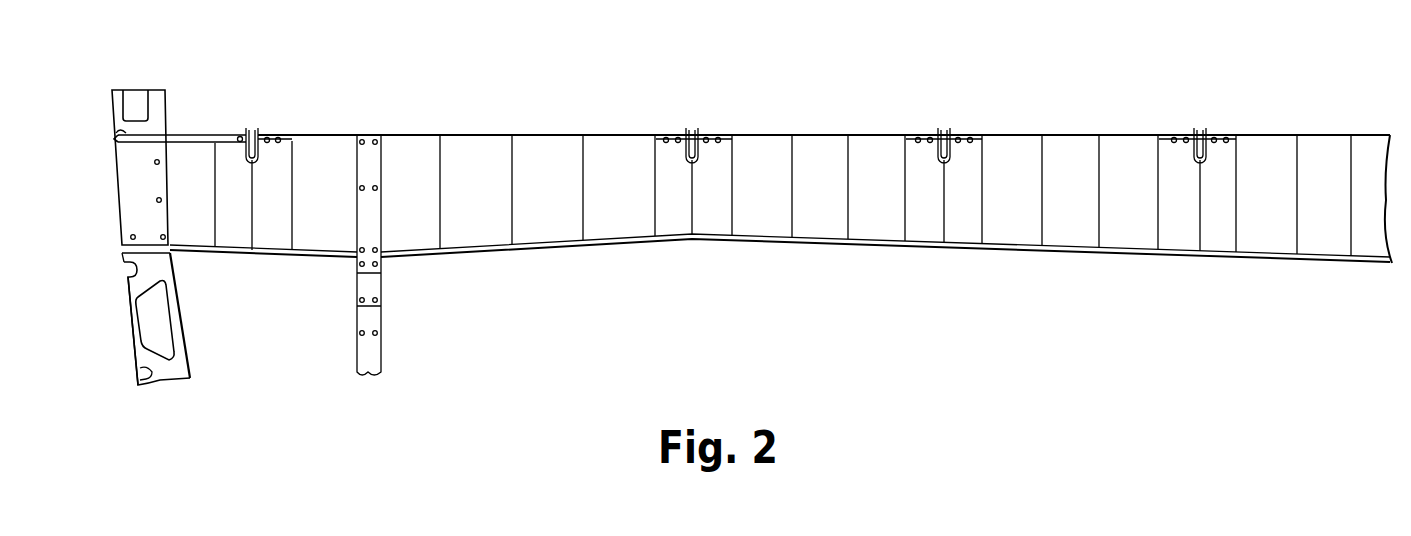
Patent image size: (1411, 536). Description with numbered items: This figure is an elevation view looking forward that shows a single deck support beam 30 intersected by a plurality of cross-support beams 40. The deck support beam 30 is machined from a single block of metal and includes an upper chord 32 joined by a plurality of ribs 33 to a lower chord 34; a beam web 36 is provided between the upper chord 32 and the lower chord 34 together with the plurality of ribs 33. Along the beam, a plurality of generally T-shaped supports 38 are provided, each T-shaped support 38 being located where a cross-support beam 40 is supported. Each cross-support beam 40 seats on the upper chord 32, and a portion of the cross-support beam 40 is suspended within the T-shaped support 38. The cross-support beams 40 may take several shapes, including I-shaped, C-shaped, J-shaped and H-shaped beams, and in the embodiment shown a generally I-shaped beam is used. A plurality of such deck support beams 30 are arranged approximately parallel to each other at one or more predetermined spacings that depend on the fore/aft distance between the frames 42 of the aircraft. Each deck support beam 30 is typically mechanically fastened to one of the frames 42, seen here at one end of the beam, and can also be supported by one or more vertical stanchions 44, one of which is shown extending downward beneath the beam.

The deck support beam 30 is at (781, 170).
The upper chord 32 is at (415, 135).
The ribs 33 is at (440, 230).
The lower chord 34 is at (533, 248).
The beam web 36 is at (490, 150).
The T-shaped support 38 is at (263, 135).
The cross-support beam 40 is at (250, 127).
The frame 42 is at (172, 297).
The vertical stanchion 44 is at (368, 352).